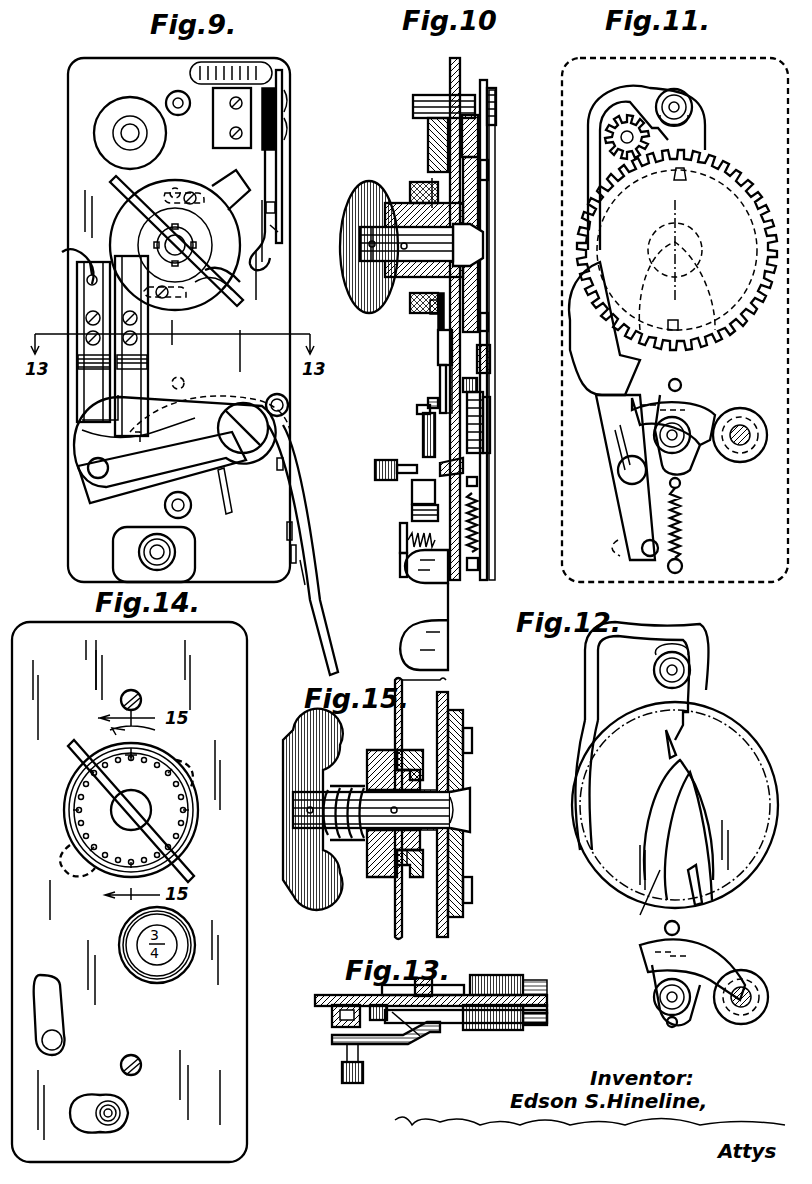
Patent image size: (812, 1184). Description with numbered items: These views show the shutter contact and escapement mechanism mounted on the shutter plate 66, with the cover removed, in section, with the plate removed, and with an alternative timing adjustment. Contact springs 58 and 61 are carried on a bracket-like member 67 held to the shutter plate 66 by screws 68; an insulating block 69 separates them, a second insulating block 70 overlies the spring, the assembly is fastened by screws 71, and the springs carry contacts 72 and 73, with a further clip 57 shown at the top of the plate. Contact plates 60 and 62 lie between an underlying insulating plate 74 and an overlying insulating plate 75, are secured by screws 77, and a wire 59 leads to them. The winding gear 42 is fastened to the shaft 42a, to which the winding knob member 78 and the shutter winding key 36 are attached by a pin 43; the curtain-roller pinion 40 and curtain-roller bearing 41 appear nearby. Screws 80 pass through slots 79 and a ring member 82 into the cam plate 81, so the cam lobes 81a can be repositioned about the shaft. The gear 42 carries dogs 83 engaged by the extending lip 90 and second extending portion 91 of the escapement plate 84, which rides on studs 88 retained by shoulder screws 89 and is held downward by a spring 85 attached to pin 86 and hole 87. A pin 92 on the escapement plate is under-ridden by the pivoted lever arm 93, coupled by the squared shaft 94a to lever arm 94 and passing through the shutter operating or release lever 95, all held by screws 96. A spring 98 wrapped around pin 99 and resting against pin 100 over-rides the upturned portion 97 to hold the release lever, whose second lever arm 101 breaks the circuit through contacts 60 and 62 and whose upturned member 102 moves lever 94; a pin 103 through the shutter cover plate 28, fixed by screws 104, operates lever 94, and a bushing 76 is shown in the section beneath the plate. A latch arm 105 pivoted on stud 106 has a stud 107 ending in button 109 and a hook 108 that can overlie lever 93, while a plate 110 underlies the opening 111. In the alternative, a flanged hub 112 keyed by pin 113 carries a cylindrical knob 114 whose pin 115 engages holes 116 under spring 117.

In FIG. 9, the shutter plate 66 is at (106, 64).
In FIG. 10, the shutter plate 66 is at (462, 72).
In FIG. 11, the shutter plate 66 is at (762, 582).
In FIG. 15, the shutter plate 66 is at (450, 704).
In FIG. 13, the shutter plate 66 is at (322, 996).
In FIG. 9, the curtain-roller bearing 41 is at (128, 102).
In FIG. 10, the curtain-roller bearing 41 is at (428, 128).
In FIG. 9, the studs 88 is at (178, 91).
In FIG. 10, the studs 88 is at (426, 94).
In FIG. 11, the studs 88 is at (682, 107).
In FIG. 12, the studs 88 is at (686, 668).
In FIG. 9, the spring clip 57 is at (218, 66).
In FIG. 9, the insulating block 69 is at (278, 68).
In FIG. 9, the second insulating block 70 is at (280, 95).
In FIG. 9, the screws 71 is at (287, 104).
In FIG. 9, the bracket-like member 67 is at (222, 124).
In FIG. 9, the screws 68 is at (230, 105).
In FIG. 9, the contact spring 61 is at (266, 168).
In FIG. 9, the contact spring 58 is at (282, 180).
In FIG. 9, the contact 72 is at (276, 207).
In FIG. 9, the contact 73 is at (280, 229).
In FIG. 9, the shutter winding key 36 is at (134, 193).
In FIG. 14, the shutter winding key 36 is at (76, 760).
In FIG. 10, the shutter winding key 36 is at (358, 296).
In FIG. 15, the shutter winding key 36 is at (290, 736).
In FIG. 9, the circumferentially extending slots 79 is at (175, 187).
In FIG. 9, the screws 80 is at (191, 192).
In FIG. 10, the screws 80 is at (414, 190).
In FIG. 9, the cam lobes or swells 81a is at (234, 204).
In FIG. 14, the cam lobes or swells 81a is at (186, 768).
In FIG. 10, the cam plate 81 is at (432, 182).
In FIG. 9, the pin 43 is at (189, 240).
In FIG. 10, the pin 43 is at (374, 228).
In FIG. 15, the pin 43 is at (305, 810).
In FIG. 9, the winding knob member 78 is at (238, 272).
In FIG. 10, the winding knob member 78 is at (430, 310).
In FIG. 9, the ring member 82 is at (230, 288).
In FIG. 10, the ring member 82 is at (414, 182).
In FIG. 9, the wire 59 is at (62, 254).
In FIG. 9, the insulating plate 74 is at (77, 290).
In FIG. 10, the insulating plate 74 is at (440, 372).
In FIG. 13, the insulating plate 74 is at (332, 1010).
In FIG. 9, the insulating plate 75 is at (86, 304).
In FIG. 10, the insulating plate 75 is at (446, 306).
In FIG. 13, the insulating plate 75 is at (340, 1015).
In FIG. 9, the screws 77 is at (86, 318).
In FIG. 10, the screws 77 is at (438, 350).
In FIG. 13, the screws 77 is at (370, 1016).
In FIG. 9, the contact plate 60 is at (88, 380).
In FIG. 9, the contact plate 62 is at (140, 380).
In FIG. 10, the contact plate 62 is at (446, 385).
In FIG. 9, the pin 92 is at (184, 381).
In FIG. 10, the pin 92 is at (478, 384).
In FIG. 11, the pin 92 is at (680, 383).
In FIG. 12, the pin 92 is at (680, 928).
In FIG. 13, the pin 92 is at (440, 980).
In FIG. 9, the pivoted lever arm 93 is at (205, 403).
In FIG. 10, the pivoted lever arm 93 is at (485, 428).
In FIG. 11, the pivoted lever arm 93 is at (712, 405).
In FIG. 12, the pivoted lever arm 93 is at (730, 970).
In FIG. 13, the pivoted lever arm 93 is at (450, 985).
In FIG. 9, the pin 99 is at (289, 405).
In FIG. 10, the pin 99 is at (428, 401).
In FIG. 13, the pin 99 is at (546, 1025).
In FIG. 9, the lever arm 94 is at (76, 427).
In FIG. 10, the lever arm 94 is at (492, 446).
In FIG. 13, the lever arm 94 is at (335, 1043).
In FIG. 9, the second pin 100 is at (288, 462).
In FIG. 9, the pin 103 is at (88, 470).
In FIG. 14, the pin 103 is at (62, 1042).
In FIG. 10, the pin 103 is at (384, 460).
In FIG. 13, the pin 103 is at (342, 1074).
In FIG. 9, the screws 96 is at (248, 456).
In FIG. 13, the screws 96 is at (500, 976).
In FIG. 9, the second lever arm 101 is at (82, 488).
In FIG. 13, the second lever arm 101 is at (410, 1022).
In FIG. 9, the upturned member 102 is at (230, 500).
In FIG. 10, the upturned member 102 is at (412, 495).
In FIG. 9, the plate 110 is at (126, 536).
In FIG. 10, the plate 110 is at (400, 532).
In FIG. 9, the spring 98 is at (292, 532).
In FIG. 10, the spring 98 is at (465, 468).
In FIG. 13, the spring 98 is at (548, 1008).
In FIG. 9, the button 109 is at (174, 556).
In FIG. 14, the button 109 is at (118, 1120).
In FIG. 10, the button 109 is at (408, 540).
In FIG. 9, the upturned portion 97 is at (297, 570).
In FIG. 10, the upturned portion 97 is at (428, 570).
In FIG. 9, the shutter operating or release lever 95 is at (292, 600).
In FIG. 10, the shutter operating or release lever 95 is at (450, 612).
In FIG. 14, the screws 104 is at (138, 695).
In FIG. 14, the shutter cover plate 28 is at (247, 695).
In FIG. 15, the shutter cover plate 28 is at (395, 720).
In FIG. 14, the holes 116 is at (146, 750).
In FIG. 15, the holes 116 is at (420, 878).
In FIG. 14, the pin 115 is at (130, 770).
In FIG. 15, the pin 115 is at (410, 752).
In FIG. 14, the shaft 42a is at (131, 830).
In FIG. 10, the shaft 42a is at (485, 246).
In FIG. 14, the cylindrical knob 114 is at (188, 836).
In FIG. 15, the cylindrical knob 114 is at (380, 752).
In FIG. 14, the opening 111 is at (80, 1126).
In FIG. 10, the escapement plate 84 is at (495, 86).
In FIG. 11, the escapement plate 84 is at (690, 97).
In FIG. 12, the escapement plate 84 is at (590, 703).
In FIG. 10, the shoulder screws 89 is at (498, 104).
In FIG. 10, the curtain-roller pinion 40 is at (480, 132).
In FIG. 11, the curtain-roller pinion 40 is at (612, 118).
In FIG. 10, the dogs or formations 83 is at (490, 170).
In FIG. 11, the dogs or formations 83 is at (676, 178).
In FIG. 12, the dogs or formations 83 is at (680, 750).
In FIG. 15, the dogs or formations 83 is at (474, 738).
In FIG. 10, the winding gear 42 is at (470, 214).
In FIG. 11, the winding gear 42 is at (748, 178).
In FIG. 15, the winding gear 42 is at (464, 852).
In FIG. 10, the second extending portion 91 is at (492, 352).
In FIG. 11, the second extending portion 91 is at (683, 308).
In FIG. 12, the second extending portion 91 is at (655, 890).
In FIG. 10, the shaft 94a is at (417, 410).
In FIG. 11, the shaft 94a is at (745, 445).
In FIG. 12, the shaft 94a is at (750, 1008).
In FIG. 13, the shaft 94a is at (500, 1032).
In FIG. 10, the hole 87 is at (478, 482).
In FIG. 11, the hole 87 is at (682, 486).
In FIG. 12, the hole 87 is at (666, 1024).
In FIG. 10, the spring 85 is at (480, 524).
In FIG. 11, the spring 85 is at (686, 528).
In FIG. 10, the pin 86 is at (480, 564).
In FIG. 11, the pin 86 is at (684, 566).
In FIG. 10, the stud 107 is at (400, 565).
In FIG. 11, the stud 107 is at (648, 556).
In FIG. 11, the extending lip 90 is at (684, 225).
In FIG. 12, the extending lip 90 is at (690, 712).
In FIG. 11, the hook 108 is at (605, 375).
In FIG. 11, the stud 106 is at (630, 468).
In FIG. 11, the latch arm 105 is at (635, 505).
In FIG. 15, the spring 117 is at (350, 786).
In FIG. 15, the pin 113 is at (385, 845).
In FIG. 15, the flanged hub 112 is at (372, 862).
In FIG. 13, the bushing 76 is at (402, 1026).